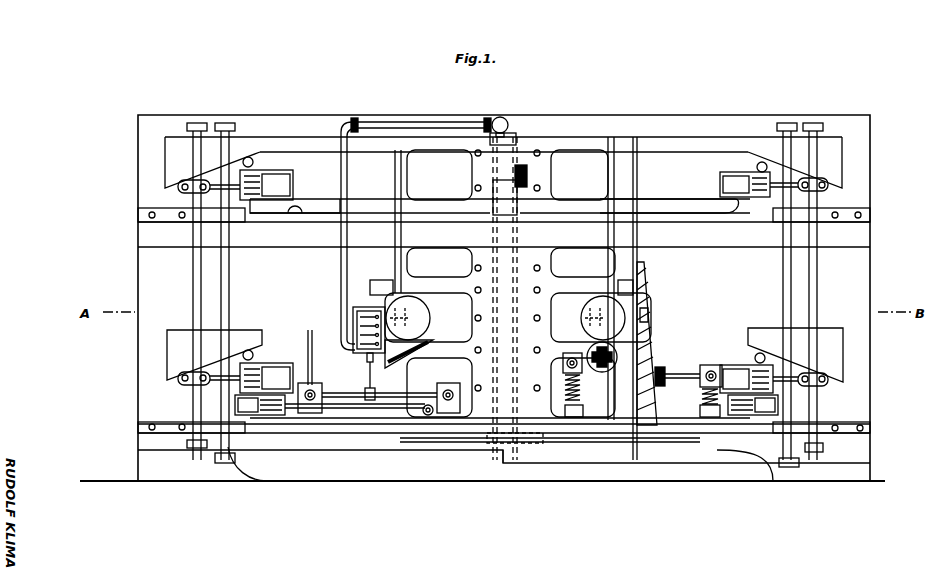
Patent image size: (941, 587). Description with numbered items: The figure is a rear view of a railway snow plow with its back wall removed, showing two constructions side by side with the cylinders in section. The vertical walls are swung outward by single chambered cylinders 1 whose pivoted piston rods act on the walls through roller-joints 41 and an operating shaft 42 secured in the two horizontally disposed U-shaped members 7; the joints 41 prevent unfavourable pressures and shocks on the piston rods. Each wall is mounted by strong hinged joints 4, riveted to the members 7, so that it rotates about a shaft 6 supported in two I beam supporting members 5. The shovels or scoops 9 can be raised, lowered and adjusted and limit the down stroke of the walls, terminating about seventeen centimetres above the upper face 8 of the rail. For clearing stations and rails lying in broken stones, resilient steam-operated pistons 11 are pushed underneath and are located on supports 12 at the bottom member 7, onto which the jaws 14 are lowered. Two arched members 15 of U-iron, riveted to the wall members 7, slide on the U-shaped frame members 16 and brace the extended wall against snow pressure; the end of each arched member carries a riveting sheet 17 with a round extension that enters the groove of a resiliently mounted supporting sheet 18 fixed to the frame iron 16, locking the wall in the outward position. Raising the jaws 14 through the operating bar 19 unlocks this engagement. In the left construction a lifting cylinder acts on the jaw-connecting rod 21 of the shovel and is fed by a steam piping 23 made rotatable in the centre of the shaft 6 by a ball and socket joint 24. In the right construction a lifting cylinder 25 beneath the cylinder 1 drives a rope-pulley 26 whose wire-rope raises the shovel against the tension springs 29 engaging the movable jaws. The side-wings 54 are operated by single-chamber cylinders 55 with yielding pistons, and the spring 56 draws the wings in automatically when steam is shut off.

The single chambered cylinder 1 is at (425, 320).
The hinged joint 4 is at (470, 160).
The I beam supporting member 5 is at (520, 212).
The shaft 6 is at (527, 172).
The U-shaped member 7 is at (305, 137).
The upper face of the rail 8 is at (113, 484).
The shovel 9 is at (503, 470).
The piston 11 is at (266, 415).
The support 12 is at (278, 420).
The jaw 14 is at (322, 395).
The arched member 15 is at (378, 205).
The U-shaped frame member 16 is at (252, 248).
The riveting sheet 17 is at (728, 205).
The supporting sheet 18 is at (300, 225).
The operating bar 19 is at (322, 385).
The jaw-connecting rod 21 is at (353, 335).
The steam piping 23 is at (412, 123).
The ball and socket joint 24 is at (510, 120).
The lifting cylinder 25 is at (618, 357).
The rope-pulley 26 is at (655, 291).
The tension spring 29 is at (565, 388).
The roller-joint 41 is at (375, 307).
The operating shaft 42 is at (395, 252).
The side-wing 54 is at (168, 478).
The single-chamber cylinder 55 is at (293, 185).
The spring 56 is at (210, 190).